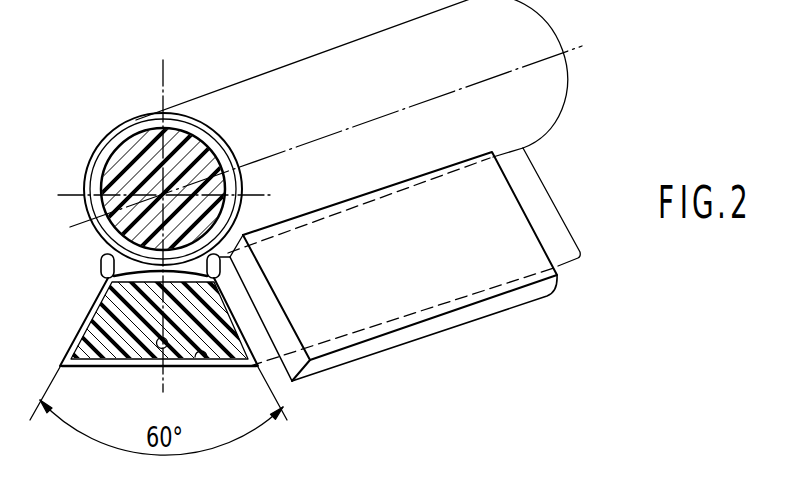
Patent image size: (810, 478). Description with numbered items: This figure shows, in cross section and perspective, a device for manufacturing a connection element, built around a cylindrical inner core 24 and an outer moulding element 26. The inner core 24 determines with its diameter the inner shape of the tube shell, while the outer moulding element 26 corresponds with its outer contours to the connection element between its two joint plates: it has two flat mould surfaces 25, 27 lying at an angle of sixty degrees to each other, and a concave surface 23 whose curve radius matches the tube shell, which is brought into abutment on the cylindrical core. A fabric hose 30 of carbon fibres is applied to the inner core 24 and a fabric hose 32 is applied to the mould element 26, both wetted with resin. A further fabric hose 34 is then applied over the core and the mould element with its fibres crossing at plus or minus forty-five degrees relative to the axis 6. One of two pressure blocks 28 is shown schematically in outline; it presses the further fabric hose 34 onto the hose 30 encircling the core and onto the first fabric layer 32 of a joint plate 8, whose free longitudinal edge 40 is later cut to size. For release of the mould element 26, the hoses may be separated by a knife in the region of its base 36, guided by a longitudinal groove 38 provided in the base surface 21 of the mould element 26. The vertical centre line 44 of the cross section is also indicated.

The axis 6 is at (477, 82).
The joint plate 8 is at (265, 352).
The base surface 21 is at (226, 360).
The concave surface 23 is at (258, 263).
The cylindrical inner core 24 is at (137, 150).
The flat mould surface 25 is at (279, 299).
The outer moulding element 26 is at (140, 327).
The flat mould surface 27 is at (95, 327).
The pressure block 28 is at (503, 252).
The fabric hose 30 is at (90, 175).
The fabric hose 32 is at (113, 280).
The further fabric hose 34 is at (222, 137).
The base 36 is at (83, 367).
The longitudinal groove 38 is at (170, 350).
The free longitudinal edge 40 is at (445, 300).
The axis 44 is at (165, 87).